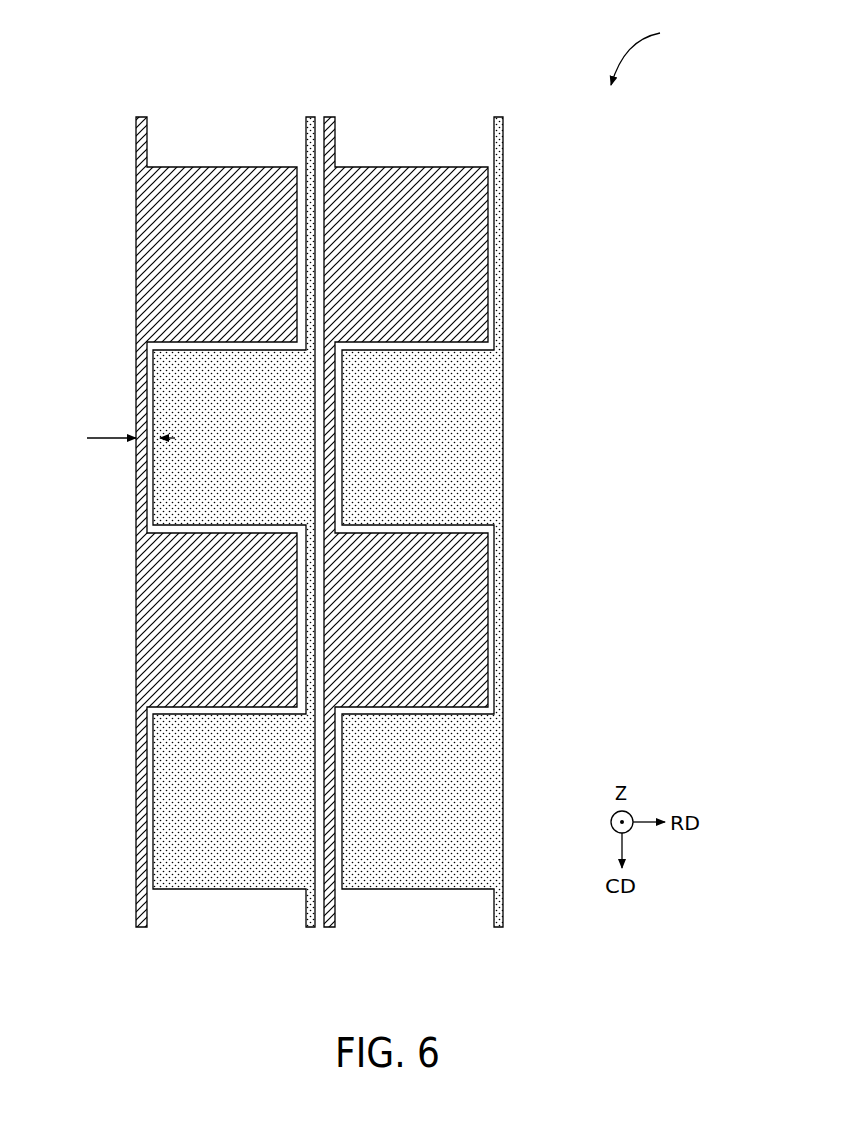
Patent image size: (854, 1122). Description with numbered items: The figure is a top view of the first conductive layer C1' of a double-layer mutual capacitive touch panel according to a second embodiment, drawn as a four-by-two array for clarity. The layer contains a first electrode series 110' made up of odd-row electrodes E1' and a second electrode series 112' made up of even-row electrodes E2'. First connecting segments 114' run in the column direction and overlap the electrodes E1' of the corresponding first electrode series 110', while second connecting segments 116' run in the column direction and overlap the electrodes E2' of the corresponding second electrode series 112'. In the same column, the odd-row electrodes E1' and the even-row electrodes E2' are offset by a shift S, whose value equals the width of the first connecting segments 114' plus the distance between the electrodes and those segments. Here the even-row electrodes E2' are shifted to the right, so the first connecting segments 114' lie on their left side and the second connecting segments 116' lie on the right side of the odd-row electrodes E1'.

The first electrode series 110' is at (310, 481).
The first connecting segments 114' is at (312, 481).
The odd-row electrodes E1' is at (312, 522).
The second electrode series 112' is at (331, 479).
The second connecting segments 116' is at (331, 479).
The even-row electrodes E2' is at (328, 522).
The shift S is at (131, 429).
The first conductive layer C1' is at (651, 52).